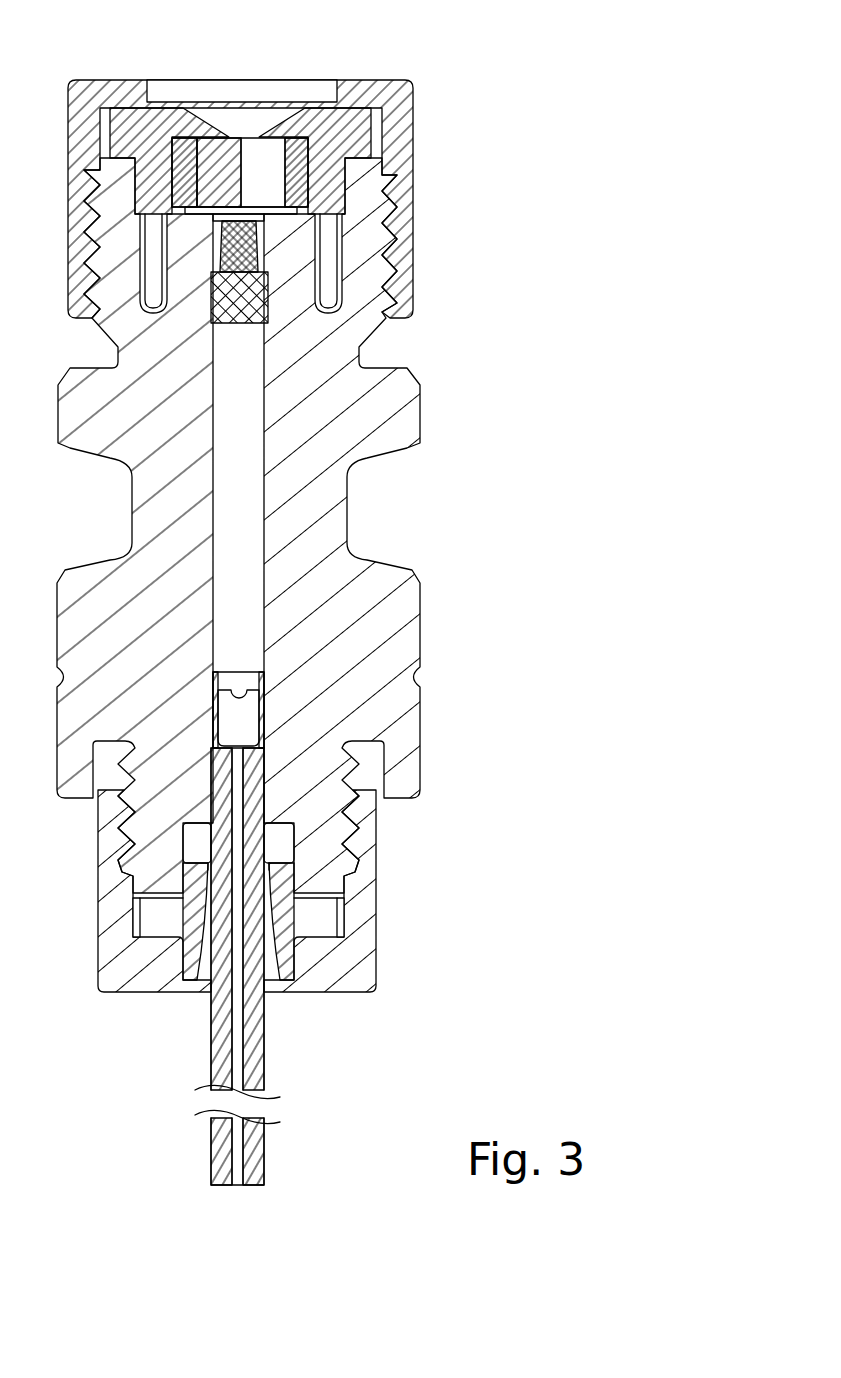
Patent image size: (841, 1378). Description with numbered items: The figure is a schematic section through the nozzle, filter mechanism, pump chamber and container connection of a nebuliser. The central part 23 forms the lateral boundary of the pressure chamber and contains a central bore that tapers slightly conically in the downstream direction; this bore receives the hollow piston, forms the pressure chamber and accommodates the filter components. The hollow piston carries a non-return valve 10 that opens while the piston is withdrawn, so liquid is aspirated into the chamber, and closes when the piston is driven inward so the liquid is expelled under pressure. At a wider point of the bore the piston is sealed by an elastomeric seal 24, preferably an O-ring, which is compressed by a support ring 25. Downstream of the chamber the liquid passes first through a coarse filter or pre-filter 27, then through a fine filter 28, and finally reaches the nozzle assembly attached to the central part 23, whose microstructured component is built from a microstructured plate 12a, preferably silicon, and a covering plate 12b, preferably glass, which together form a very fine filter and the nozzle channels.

The non-return valve 10 is at (237, 715).
The microstructured plate 12a is at (416, 98).
The plate 12b is at (257, 180).
The central part 23 is at (318, 556).
The elastomeric seal 24 is at (278, 845).
The support ring 25 is at (297, 913).
The coarse filter or pre-filter 27 is at (260, 308).
The fine filter 28 is at (257, 242).